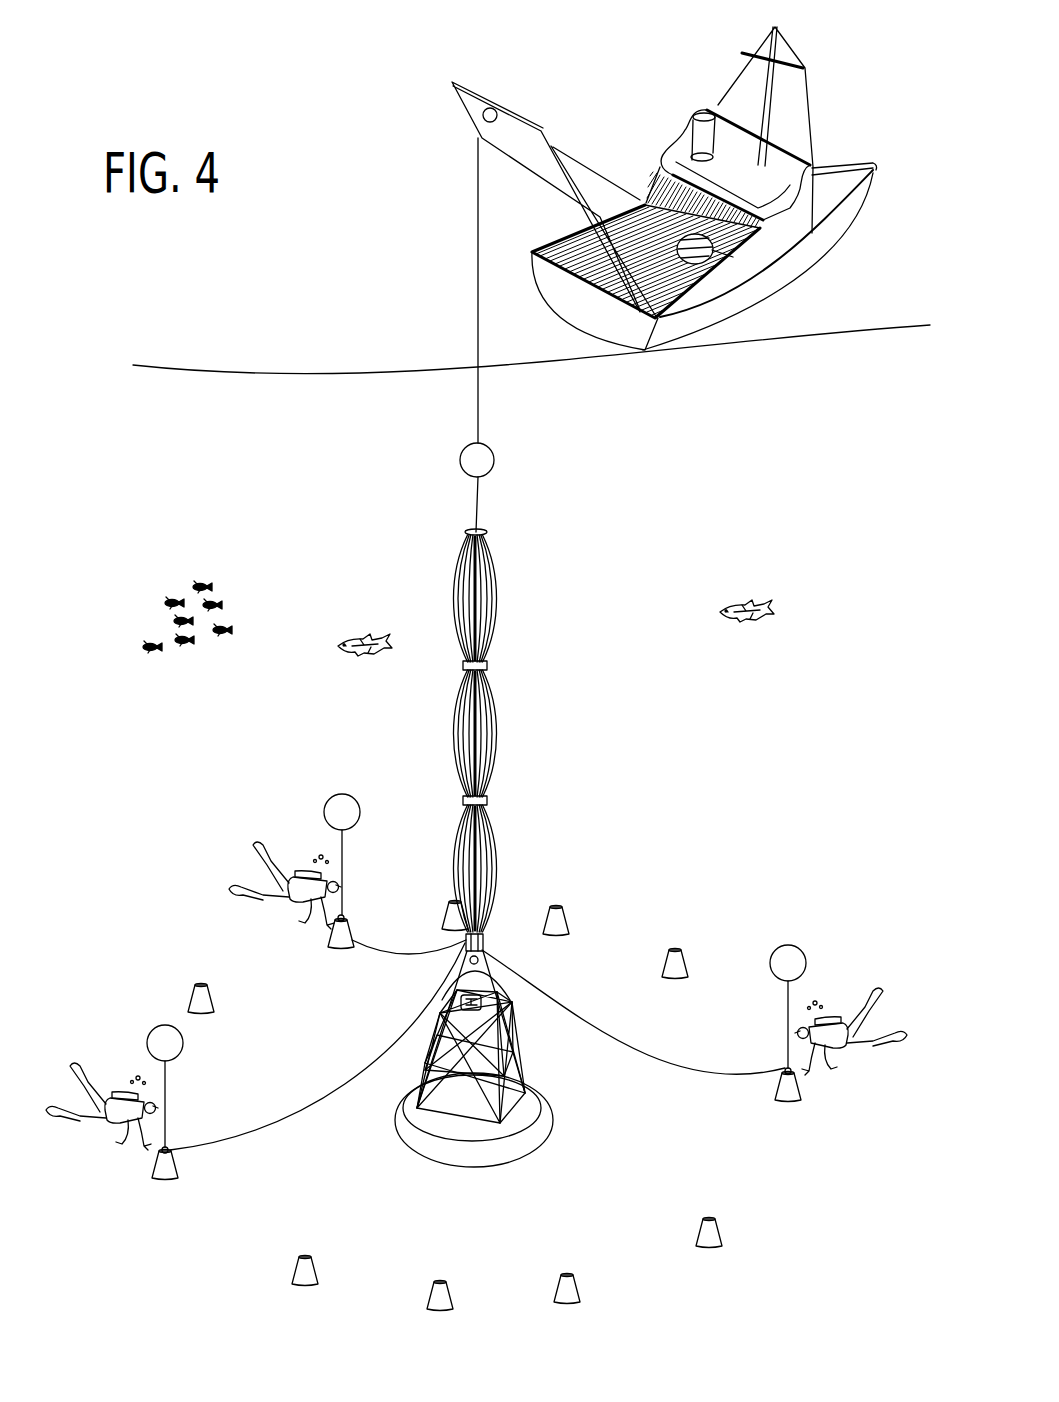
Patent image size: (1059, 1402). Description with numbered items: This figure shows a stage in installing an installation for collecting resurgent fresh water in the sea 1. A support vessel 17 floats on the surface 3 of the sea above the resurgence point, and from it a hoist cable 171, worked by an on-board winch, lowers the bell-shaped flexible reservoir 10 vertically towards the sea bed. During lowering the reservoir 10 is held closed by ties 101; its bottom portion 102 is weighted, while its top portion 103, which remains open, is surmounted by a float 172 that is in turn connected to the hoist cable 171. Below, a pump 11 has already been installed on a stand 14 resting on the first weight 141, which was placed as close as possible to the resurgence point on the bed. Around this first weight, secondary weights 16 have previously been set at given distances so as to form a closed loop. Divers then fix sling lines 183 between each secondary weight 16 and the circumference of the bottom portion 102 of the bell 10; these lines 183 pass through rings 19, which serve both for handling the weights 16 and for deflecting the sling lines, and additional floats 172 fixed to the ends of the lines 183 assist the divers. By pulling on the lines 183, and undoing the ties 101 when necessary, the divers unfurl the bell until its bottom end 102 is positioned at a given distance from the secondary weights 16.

The sea 1 is at (828, 698).
The surface of the sea 3 is at (307, 362).
The flexible reservoir 10 is at (511, 721).
The ties 101 is at (485, 666).
The bottom portion of the reservoir 102 is at (486, 935).
The top portion of the reservoir 103 is at (490, 527).
The pump 11 is at (483, 1001).
The stand 14 is at (507, 1059).
The first weight 141 is at (530, 1140).
The secondary weights 16 is at (673, 950).
The support vessel 17 is at (790, 272).
The hoist cable 171 is at (481, 408).
The float 172 is at (802, 948).
The sling lines 183 is at (281, 1120).
The rings 19 is at (176, 1137).